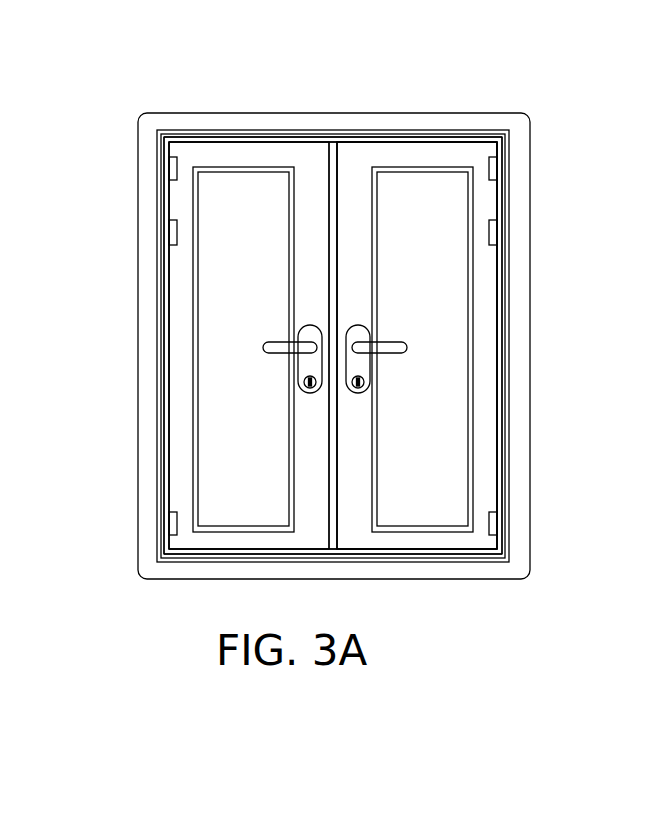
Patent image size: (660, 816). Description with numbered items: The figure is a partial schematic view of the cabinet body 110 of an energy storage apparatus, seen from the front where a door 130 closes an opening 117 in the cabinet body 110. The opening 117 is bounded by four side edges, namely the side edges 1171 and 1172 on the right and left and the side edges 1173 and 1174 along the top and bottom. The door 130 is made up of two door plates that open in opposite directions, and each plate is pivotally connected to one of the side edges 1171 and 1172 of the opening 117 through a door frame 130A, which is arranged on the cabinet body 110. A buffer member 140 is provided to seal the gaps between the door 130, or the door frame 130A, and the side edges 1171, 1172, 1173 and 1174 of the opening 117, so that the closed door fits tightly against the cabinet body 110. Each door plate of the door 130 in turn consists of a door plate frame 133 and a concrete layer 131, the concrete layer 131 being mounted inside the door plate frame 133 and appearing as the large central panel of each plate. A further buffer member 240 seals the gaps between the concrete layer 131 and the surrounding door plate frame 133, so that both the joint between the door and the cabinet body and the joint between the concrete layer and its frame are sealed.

The cabinet body 110 is at (145, 149).
The opening 117 is at (303, 140).
The side edge 1171 is at (488, 399).
The side edge 1172 is at (170, 262).
The side edge 1173 is at (380, 134).
The side edge 1174 is at (407, 559).
The buffer member 140 is at (509, 154).
The door 130 is at (590, 293).
The door frame 130A is at (500, 252).
The buffer member 240 is at (473, 198).
The door plate frame 133 is at (485, 304).
The concrete layer 131 is at (450, 330).